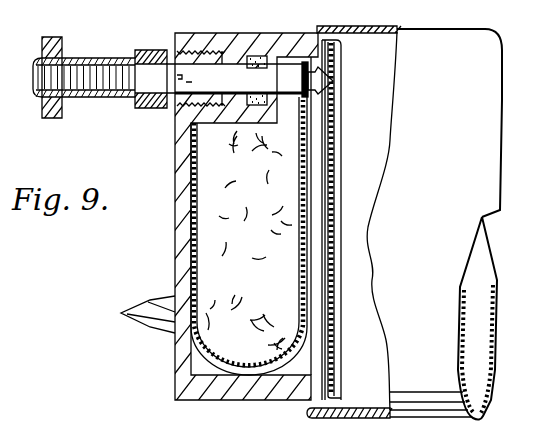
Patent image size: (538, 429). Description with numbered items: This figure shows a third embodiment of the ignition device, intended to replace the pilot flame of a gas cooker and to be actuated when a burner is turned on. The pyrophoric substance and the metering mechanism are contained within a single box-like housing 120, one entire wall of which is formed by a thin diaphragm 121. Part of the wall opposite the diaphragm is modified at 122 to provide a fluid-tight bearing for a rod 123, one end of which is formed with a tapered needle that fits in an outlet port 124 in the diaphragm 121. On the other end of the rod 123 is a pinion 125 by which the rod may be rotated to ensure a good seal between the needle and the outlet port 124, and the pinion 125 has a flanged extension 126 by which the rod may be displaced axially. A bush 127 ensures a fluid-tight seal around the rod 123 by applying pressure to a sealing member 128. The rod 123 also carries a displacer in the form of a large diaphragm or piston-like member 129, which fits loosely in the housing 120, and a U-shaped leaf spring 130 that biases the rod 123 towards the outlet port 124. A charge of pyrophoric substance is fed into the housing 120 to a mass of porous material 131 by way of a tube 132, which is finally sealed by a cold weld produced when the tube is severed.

The box-like housing 120 is at (178, 364).
The thin diaphragm 121 is at (334, 174).
The fluid-tight bearing 122 is at (254, 118).
The rod 123 is at (170, 77).
The outlet port 124 is at (334, 82).
The pinion 125 is at (149, 109).
The flanged extension 126 is at (54, 118).
The bush 127 is at (178, 57).
The sealing member 128 is at (257, 56).
The piston-like member 129 is at (313, 183).
The U-shaped leaf spring 130 is at (197, 255).
The porous material 131 is at (192, 226).
The tube 132 is at (152, 301).